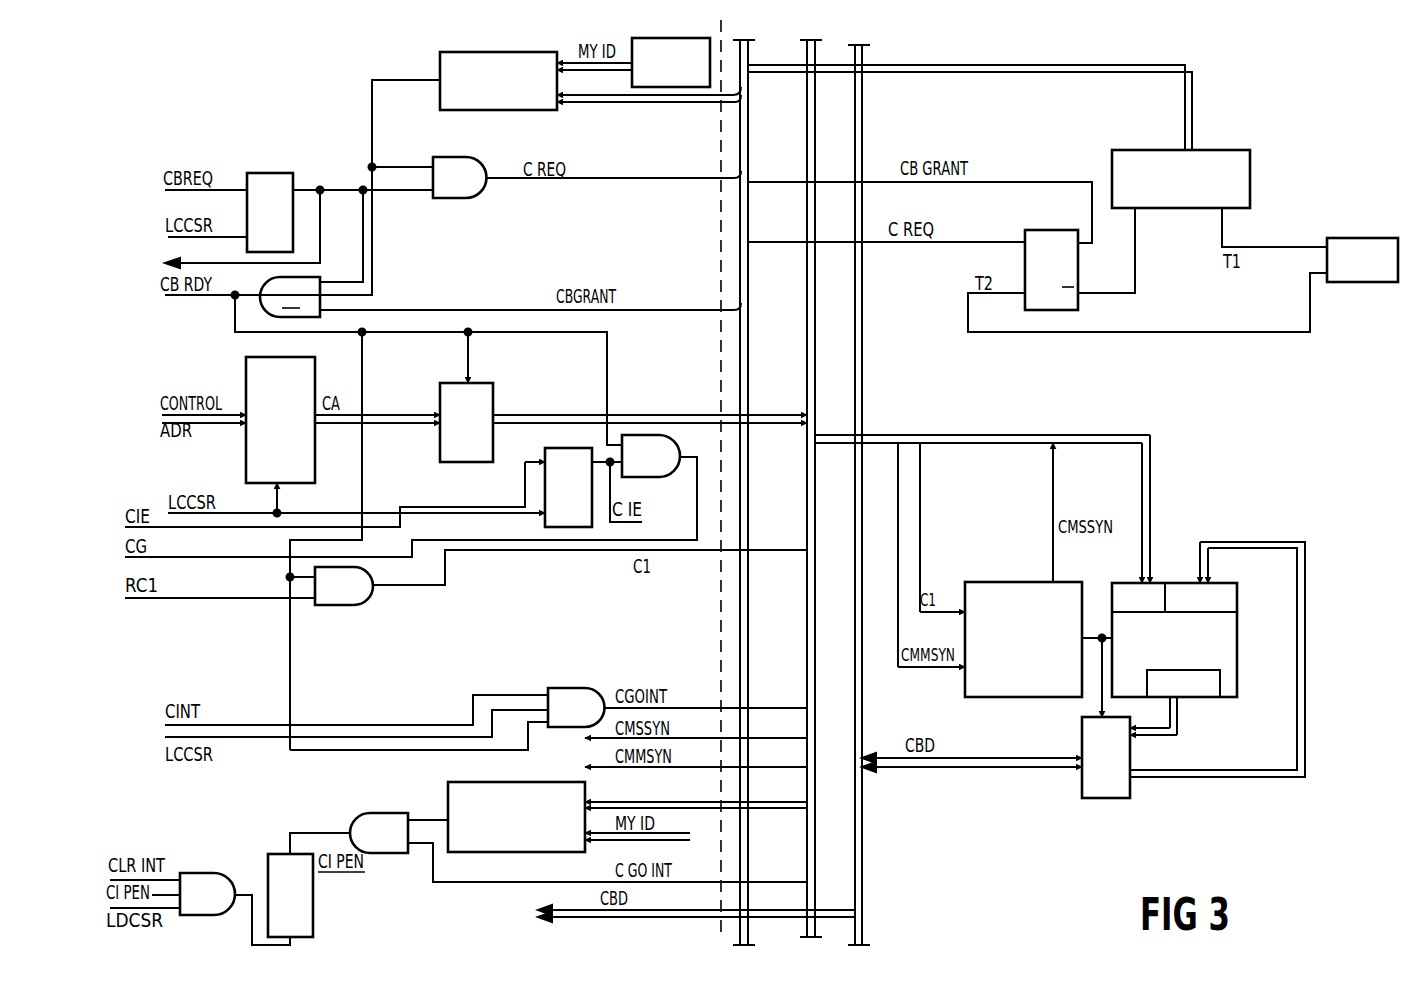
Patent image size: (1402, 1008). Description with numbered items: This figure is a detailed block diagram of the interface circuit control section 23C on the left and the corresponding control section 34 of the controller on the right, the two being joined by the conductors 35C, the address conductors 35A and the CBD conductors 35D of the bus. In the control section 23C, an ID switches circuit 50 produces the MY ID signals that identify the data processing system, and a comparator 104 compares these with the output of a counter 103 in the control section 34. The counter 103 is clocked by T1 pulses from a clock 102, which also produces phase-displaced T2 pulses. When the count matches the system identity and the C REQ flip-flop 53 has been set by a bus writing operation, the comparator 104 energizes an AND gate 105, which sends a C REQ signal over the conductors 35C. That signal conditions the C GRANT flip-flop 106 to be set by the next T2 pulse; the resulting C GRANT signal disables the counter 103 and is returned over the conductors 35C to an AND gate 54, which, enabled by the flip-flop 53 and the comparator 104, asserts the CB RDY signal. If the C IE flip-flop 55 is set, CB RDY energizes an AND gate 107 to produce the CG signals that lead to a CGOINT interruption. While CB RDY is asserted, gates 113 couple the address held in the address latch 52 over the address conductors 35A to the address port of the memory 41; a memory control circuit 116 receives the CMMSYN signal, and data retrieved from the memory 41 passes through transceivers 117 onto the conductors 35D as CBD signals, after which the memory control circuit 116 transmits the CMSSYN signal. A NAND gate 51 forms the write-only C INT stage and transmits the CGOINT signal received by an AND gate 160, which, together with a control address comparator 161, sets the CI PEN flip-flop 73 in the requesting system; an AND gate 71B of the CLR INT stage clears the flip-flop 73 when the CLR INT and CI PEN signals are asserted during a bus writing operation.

The interface circuit control section 23C is at (428, 480).
The control section 34 is at (1130, 858).
The address conductors 35A is at (807, 368).
The conductors 35C is at (748, 152).
The CBD conductors 35D is at (862, 345).
The memory 41 is at (1237, 660).
The ID switches circuit 50 is at (680, 38).
The NAND gate 51 is at (572, 688).
The address latch 52 is at (315, 375).
The flip-flop 53 is at (262, 173).
The AND gate 54 is at (290, 297).
The flip-flop 55 is at (551, 448).
The AND gate 71B is at (186, 873).
The flip-flop 73 is at (313, 913).
The clock 102 is at (1352, 238).
The counter 103 is at (1224, 150).
The comparator 104 is at (440, 99).
The AND gate 105 is at (488, 199).
The C GRANT flip-flop 106 is at (1030, 230).
The AND gate 107 is at (648, 478).
The gates 113 is at (493, 393).
The memory control circuit 116 is at (990, 582).
The transceivers 117 is at (1082, 726).
The AND gate 160 is at (380, 813).
The control address comparator 161 is at (540, 782).